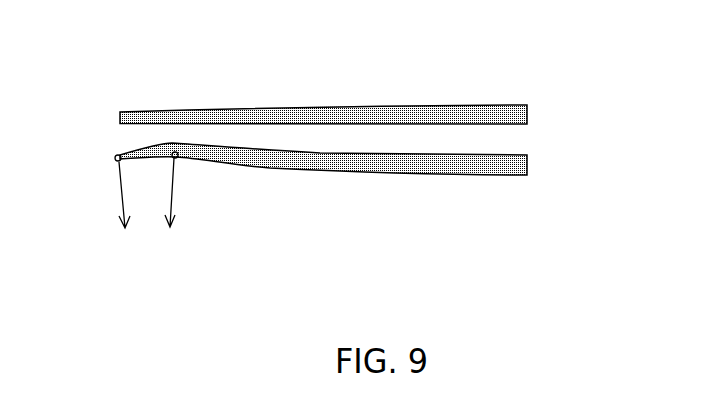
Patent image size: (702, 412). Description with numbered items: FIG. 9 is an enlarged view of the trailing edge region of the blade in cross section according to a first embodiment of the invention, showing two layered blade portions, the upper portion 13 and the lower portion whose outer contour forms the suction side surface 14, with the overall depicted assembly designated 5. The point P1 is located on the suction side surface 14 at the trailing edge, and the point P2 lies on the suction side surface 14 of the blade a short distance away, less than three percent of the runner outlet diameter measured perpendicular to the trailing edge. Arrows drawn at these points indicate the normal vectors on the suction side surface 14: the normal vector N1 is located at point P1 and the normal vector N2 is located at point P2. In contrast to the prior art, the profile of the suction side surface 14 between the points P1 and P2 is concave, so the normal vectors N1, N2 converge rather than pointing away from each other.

The blade assembly 5 is at (358, 143).
The upper layer 13 is at (225, 108).
The suction side surface 14 is at (365, 177).
The point P1 is at (115, 160).
The point P2 is at (178, 160).
The normal vector N1 is at (114, 218).
The normal vector N2 is at (187, 216).